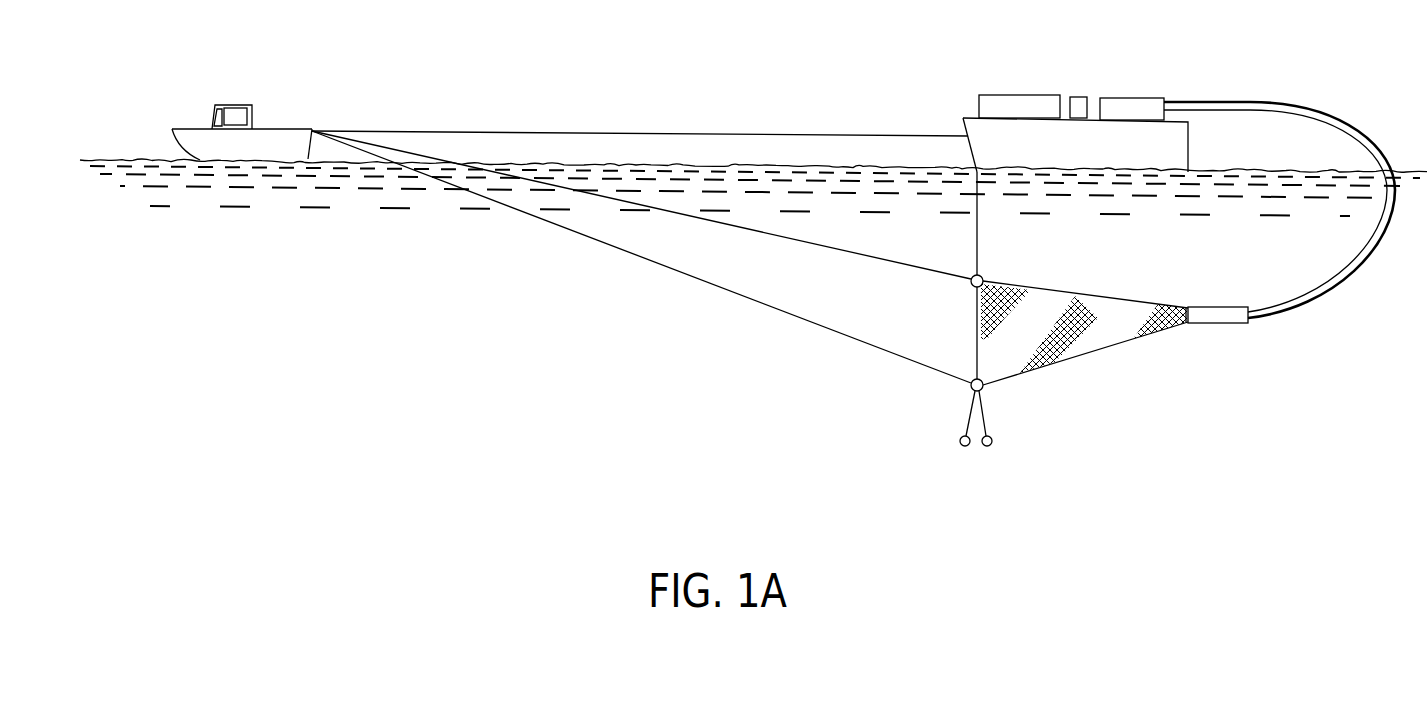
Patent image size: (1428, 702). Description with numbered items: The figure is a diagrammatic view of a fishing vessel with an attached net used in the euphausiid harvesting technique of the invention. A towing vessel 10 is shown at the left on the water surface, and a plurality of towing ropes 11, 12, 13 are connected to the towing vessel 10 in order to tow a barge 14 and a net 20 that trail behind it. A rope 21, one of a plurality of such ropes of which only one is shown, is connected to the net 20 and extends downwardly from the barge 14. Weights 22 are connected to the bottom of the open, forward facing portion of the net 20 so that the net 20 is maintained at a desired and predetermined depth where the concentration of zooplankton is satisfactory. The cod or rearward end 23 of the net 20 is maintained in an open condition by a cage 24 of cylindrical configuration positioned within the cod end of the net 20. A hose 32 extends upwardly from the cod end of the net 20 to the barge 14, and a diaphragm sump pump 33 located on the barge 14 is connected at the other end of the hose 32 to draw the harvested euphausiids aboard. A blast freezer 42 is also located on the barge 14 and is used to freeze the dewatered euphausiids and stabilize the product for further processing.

The towing vessel 10 is at (255, 117).
The towing rope 11 is at (558, 132).
The towing rope 12 is at (823, 248).
The towing rope 13 is at (742, 298).
The barge 14 is at (1171, 143).
The net 20 is at (1073, 362).
The rope 21 is at (985, 243).
The weights 22 is at (967, 447).
The cod end 23 is at (1187, 326).
The cage 24 is at (1226, 294).
The hose 32 is at (1307, 307).
The diaphragm sump pump 33 is at (1130, 97).
The blast freezer 42 is at (1080, 95).